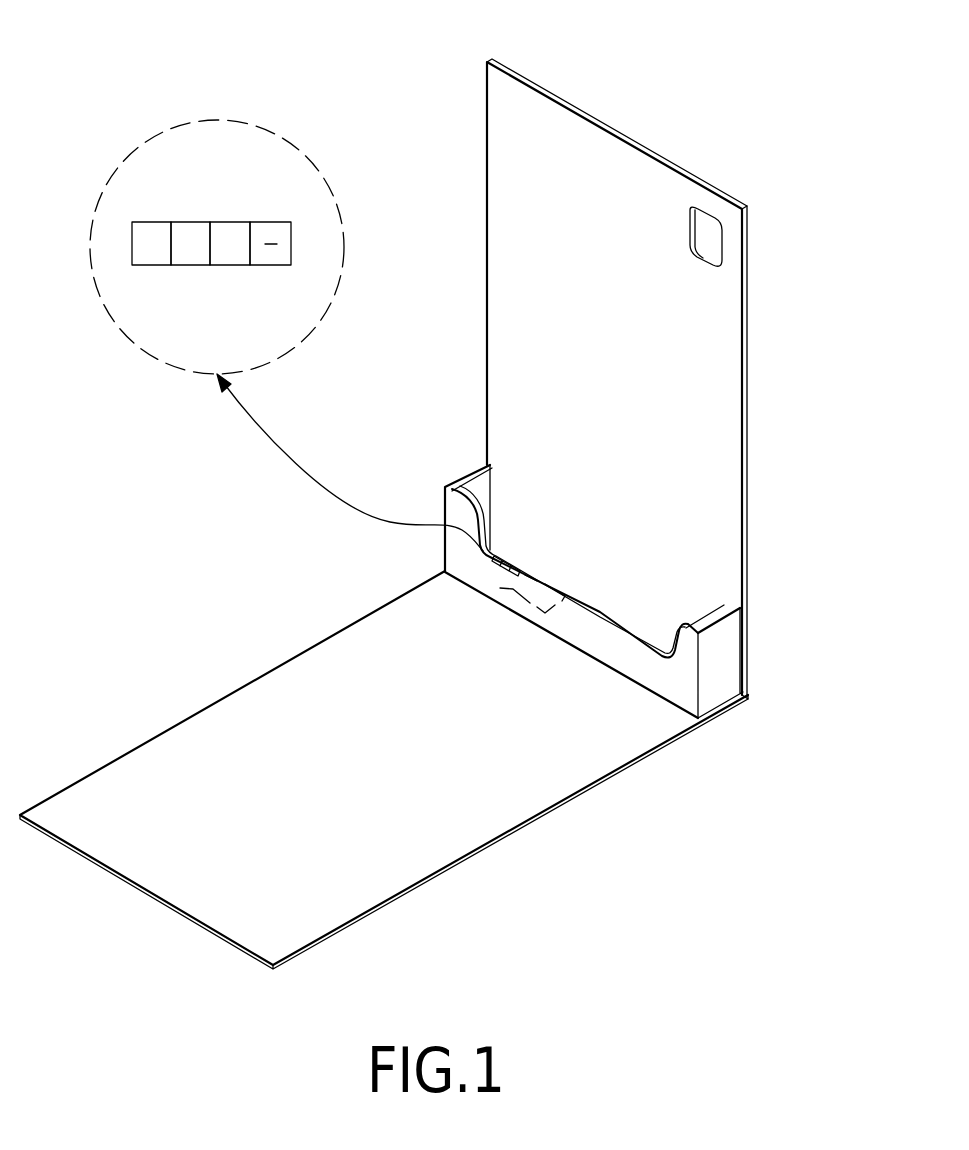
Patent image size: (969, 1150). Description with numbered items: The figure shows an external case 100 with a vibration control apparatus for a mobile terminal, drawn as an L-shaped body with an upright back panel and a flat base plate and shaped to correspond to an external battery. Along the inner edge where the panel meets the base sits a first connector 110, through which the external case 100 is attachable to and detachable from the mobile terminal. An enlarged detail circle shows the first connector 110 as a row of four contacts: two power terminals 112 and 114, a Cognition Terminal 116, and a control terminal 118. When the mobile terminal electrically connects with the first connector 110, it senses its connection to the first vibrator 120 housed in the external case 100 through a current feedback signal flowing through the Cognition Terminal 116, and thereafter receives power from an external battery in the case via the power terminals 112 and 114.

The external case 100 is at (740, 373).
The first connector 110 is at (215, 118).
The power terminal 112 is at (152, 265).
The power terminal 114 is at (268, 222).
The Cognition Terminal (CT) 116 is at (188, 222).
The control terminal 118 is at (233, 265).
The first vibrator 120 is at (507, 581).